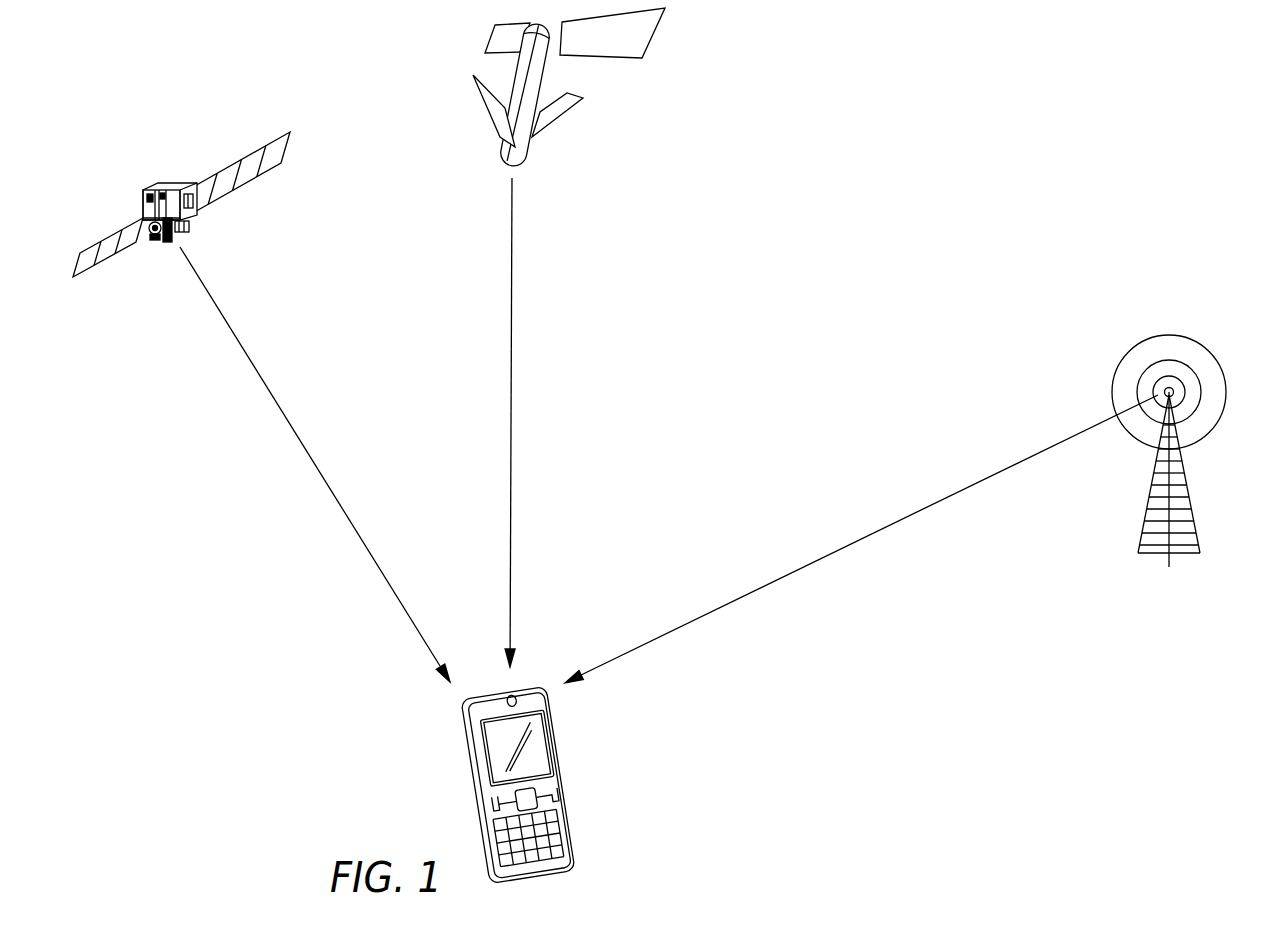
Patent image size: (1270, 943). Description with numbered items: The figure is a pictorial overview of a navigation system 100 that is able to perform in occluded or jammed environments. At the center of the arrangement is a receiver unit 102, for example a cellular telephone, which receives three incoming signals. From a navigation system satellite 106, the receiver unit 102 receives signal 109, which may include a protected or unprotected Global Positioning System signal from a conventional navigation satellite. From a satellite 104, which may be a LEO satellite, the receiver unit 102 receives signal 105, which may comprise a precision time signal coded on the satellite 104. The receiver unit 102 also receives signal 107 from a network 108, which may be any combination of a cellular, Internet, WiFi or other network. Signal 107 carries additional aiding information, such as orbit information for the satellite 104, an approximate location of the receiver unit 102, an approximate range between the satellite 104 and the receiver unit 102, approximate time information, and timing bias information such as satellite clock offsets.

The navigation system 100 is at (980, 175).
The receiver unit 102 is at (462, 742).
The satellite 104 is at (658, 33).
The signal 105 is at (512, 405).
The navigation system satellite 106 is at (290, 133).
The signal 107 is at (855, 543).
The network 108 is at (1187, 498).
The signal 109 is at (306, 452).